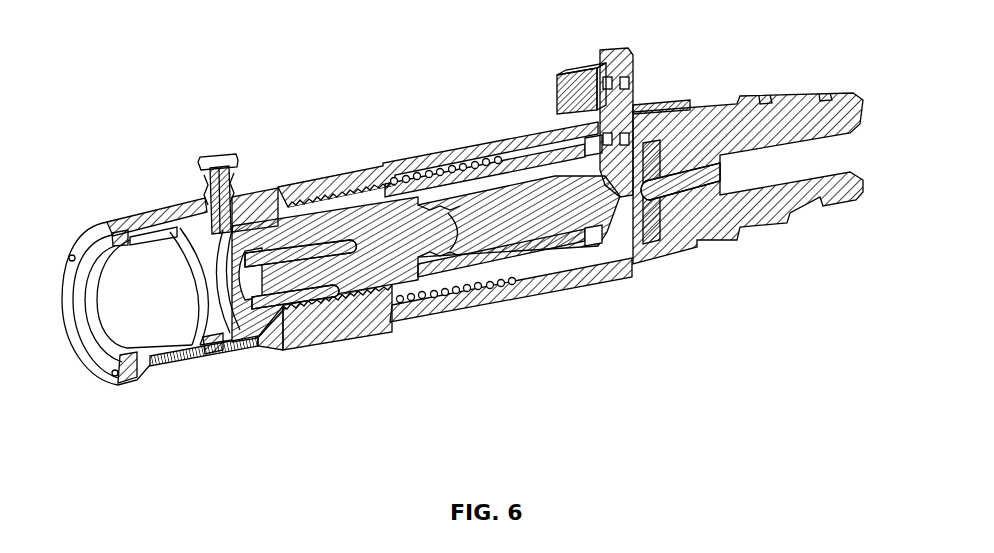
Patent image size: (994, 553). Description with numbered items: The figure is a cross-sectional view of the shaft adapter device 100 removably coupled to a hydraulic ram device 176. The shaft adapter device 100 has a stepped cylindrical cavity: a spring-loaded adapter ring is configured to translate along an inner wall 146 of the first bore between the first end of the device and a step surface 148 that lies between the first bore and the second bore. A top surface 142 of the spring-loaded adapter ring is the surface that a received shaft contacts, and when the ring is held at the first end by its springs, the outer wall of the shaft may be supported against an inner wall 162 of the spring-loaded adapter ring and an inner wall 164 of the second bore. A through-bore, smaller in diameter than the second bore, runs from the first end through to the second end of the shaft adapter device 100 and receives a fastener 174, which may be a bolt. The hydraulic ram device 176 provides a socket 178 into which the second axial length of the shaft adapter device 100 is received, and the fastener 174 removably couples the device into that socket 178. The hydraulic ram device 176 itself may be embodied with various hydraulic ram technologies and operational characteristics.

The shaft adapter device 100 is at (142, 136).
The top surface 142 is at (82, 292).
The inner wall 146 is at (135, 322).
The step surface 148 is at (196, 336).
The inner wall 162 is at (105, 328).
The inner wall 164 is at (240, 348).
The fastener 174 is at (290, 262).
The hydraulic ram device 176 is at (418, 154).
The socket 178 is at (300, 218).